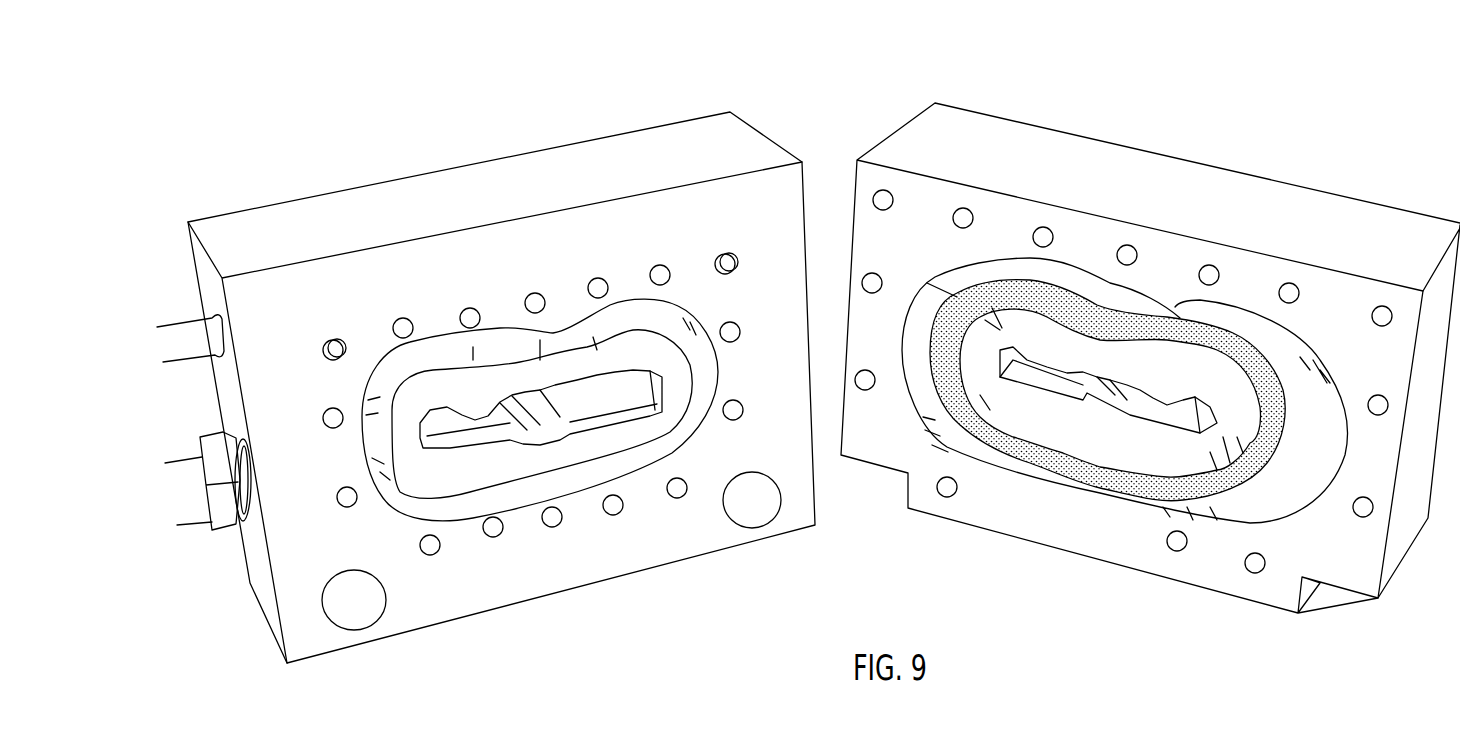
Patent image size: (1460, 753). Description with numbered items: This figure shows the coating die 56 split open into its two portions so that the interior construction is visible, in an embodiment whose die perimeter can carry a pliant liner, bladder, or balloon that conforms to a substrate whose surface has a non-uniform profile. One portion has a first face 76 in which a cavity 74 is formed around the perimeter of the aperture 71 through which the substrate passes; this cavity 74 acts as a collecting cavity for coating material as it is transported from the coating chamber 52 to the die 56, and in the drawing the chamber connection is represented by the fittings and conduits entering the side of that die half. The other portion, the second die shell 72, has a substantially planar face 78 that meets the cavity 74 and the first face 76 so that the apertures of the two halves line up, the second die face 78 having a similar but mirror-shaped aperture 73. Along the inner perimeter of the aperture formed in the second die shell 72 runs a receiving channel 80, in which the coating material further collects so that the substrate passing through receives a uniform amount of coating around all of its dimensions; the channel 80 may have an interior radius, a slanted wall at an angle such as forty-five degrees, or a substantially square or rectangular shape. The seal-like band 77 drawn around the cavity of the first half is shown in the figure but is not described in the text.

The coating die 56 is at (593, 52).
The second die shell 72 is at (672, 140).
The first face 76 is at (1259, 273).
The planar face 78 is at (430, 403).
The aperture 71 is at (568, 397).
The receiving channel 80 is at (465, 447).
The coating chamber 52 is at (190, 525).
The cavity 74 is at (990, 268).
The seal 77 is at (1083, 470).
The mirror-shaped aperture 73 is at (1050, 377).